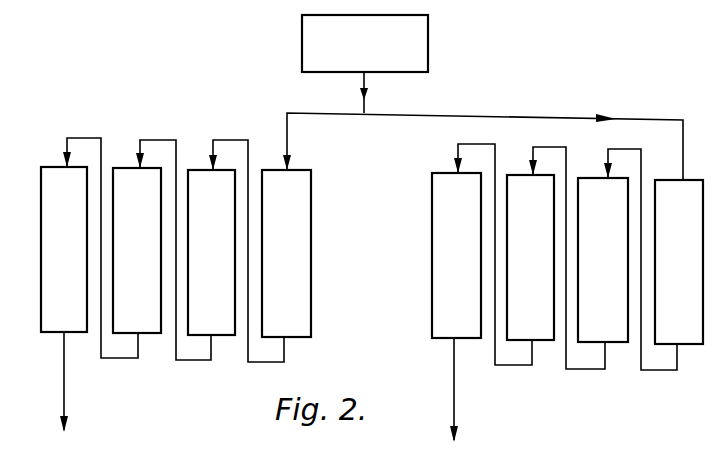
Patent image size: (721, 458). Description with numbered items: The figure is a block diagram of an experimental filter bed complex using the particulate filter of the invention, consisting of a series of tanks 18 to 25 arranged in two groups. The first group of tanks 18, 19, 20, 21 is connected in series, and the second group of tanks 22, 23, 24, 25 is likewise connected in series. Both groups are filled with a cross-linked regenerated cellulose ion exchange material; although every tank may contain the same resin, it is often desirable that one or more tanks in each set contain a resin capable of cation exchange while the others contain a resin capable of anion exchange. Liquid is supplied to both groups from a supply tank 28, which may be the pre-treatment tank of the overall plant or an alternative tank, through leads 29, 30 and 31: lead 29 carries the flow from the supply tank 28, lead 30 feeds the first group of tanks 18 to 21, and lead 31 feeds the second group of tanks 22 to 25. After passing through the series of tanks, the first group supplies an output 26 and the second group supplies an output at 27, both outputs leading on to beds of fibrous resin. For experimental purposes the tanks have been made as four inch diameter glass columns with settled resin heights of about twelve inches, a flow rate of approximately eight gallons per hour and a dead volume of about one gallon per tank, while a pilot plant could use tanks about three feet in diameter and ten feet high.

The tank 18 is at (260, 251).
The tank 19 is at (185, 250).
The tank 20 is at (112, 248).
The tank 21 is at (64, 249).
The tank 22 is at (653, 259).
The tank 23 is at (578, 258).
The tank 24 is at (504, 254).
The tank 25 is at (456, 255).
The output 26 is at (66, 389).
The output 27 is at (456, 399).
The supply tank 28 is at (365, 43).
The lead 29 is at (366, 102).
The lead 30 is at (314, 112).
The lead 31 is at (547, 117).